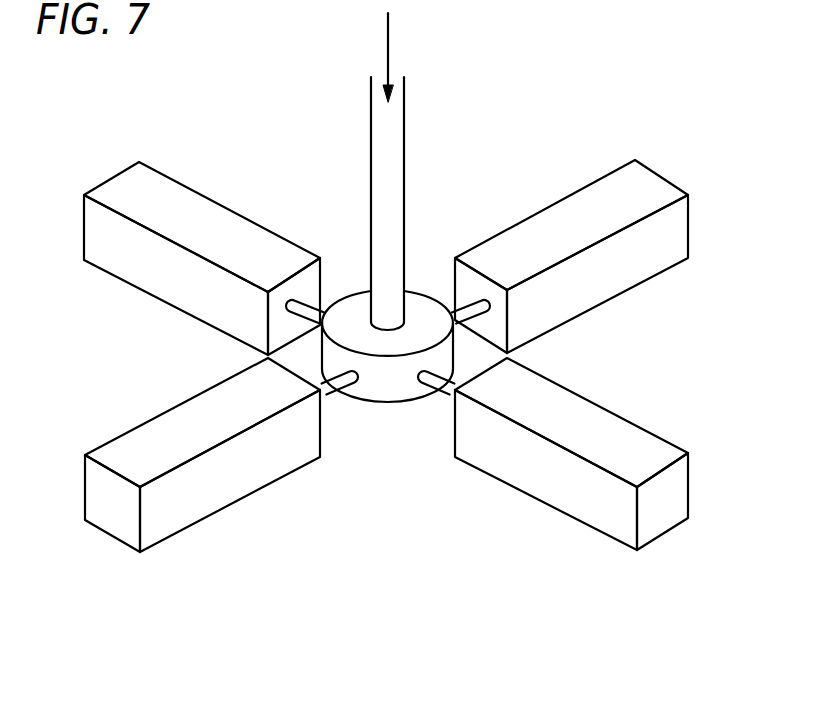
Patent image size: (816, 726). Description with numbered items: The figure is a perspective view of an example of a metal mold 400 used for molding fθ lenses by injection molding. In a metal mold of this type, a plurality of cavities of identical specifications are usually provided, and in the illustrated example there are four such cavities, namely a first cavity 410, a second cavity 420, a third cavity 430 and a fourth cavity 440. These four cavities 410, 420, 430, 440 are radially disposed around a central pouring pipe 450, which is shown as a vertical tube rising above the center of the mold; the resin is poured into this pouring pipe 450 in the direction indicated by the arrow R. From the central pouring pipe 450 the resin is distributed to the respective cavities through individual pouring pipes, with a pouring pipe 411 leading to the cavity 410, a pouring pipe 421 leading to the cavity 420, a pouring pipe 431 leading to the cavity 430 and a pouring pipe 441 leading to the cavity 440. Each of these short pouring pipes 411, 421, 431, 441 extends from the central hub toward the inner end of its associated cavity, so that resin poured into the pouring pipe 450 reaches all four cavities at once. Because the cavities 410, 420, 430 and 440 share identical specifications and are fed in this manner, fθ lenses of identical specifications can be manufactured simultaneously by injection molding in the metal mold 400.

The metal mold 400 is at (574, 102).
The cavity 410 is at (200, 193).
The pouring pipe 411 is at (303, 302).
The cavity 420 is at (210, 518).
The pouring pipe 421 is at (334, 393).
The cavity 430 is at (600, 406).
The pouring pipe 431 is at (437, 398).
The cavity 440 is at (637, 286).
The pouring pipe 441 is at (472, 302).
The pouring pipe 450 is at (404, 137).